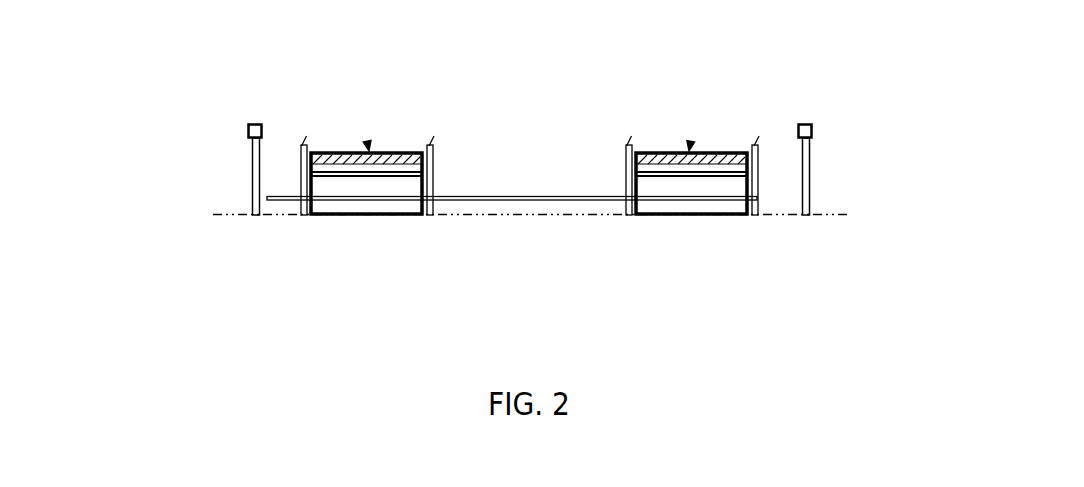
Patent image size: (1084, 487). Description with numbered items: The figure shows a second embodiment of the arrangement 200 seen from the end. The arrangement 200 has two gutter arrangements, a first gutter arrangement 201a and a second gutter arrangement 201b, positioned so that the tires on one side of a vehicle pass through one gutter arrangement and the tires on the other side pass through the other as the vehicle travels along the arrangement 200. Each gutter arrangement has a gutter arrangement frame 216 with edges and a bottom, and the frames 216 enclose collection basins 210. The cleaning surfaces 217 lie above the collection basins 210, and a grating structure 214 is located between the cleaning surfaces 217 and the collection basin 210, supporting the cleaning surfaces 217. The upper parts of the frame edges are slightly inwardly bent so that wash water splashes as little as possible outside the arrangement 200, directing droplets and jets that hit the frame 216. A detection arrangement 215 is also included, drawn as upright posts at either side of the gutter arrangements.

The arrangement 200 is at (88, 34).
The first gutter arrangement 201a is at (357, 165).
The second gutter arrangement 201b is at (663, 165).
The collection basin 210 is at (690, 185).
The grating structure 214 is at (370, 175).
The detection arrangement 215 is at (253, 125).
The gutter arrangement frame 216 is at (434, 176).
The cleaning surfaces 217 is at (368, 146).